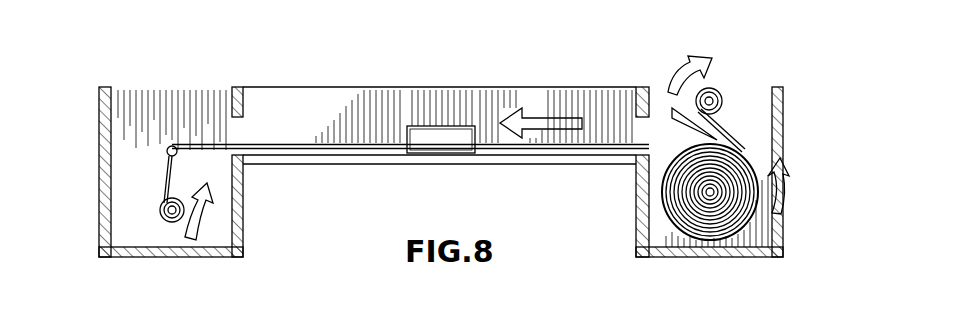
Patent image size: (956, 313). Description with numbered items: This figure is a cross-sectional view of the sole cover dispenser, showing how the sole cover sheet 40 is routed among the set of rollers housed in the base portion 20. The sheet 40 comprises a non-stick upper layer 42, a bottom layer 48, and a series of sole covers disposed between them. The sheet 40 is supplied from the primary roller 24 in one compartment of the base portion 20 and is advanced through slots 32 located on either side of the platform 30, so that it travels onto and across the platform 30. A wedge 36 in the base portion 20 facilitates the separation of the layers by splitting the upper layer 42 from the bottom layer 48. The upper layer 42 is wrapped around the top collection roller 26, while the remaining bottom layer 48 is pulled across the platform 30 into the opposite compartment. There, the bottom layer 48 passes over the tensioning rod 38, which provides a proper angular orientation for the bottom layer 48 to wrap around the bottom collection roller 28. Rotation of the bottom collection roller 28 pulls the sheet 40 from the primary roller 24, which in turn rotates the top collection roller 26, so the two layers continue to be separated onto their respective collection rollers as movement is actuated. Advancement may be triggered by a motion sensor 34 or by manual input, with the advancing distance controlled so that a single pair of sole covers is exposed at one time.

The base portion 20 is at (774, 120).
The primary roller 24 is at (708, 192).
The top collection roller 26 is at (712, 94).
The bottom collection roller 28 is at (168, 211).
The platform 30 is at (327, 164).
The slots 32 is at (242, 133).
The motion sensor 34 is at (440, 130).
The wedge 36 is at (673, 112).
The tensioning rod 38 is at (167, 151).
The sole cover sheet 40 is at (772, 210).
The non-stick upper layer 42 is at (725, 96).
The bottom layer 48 is at (172, 222).